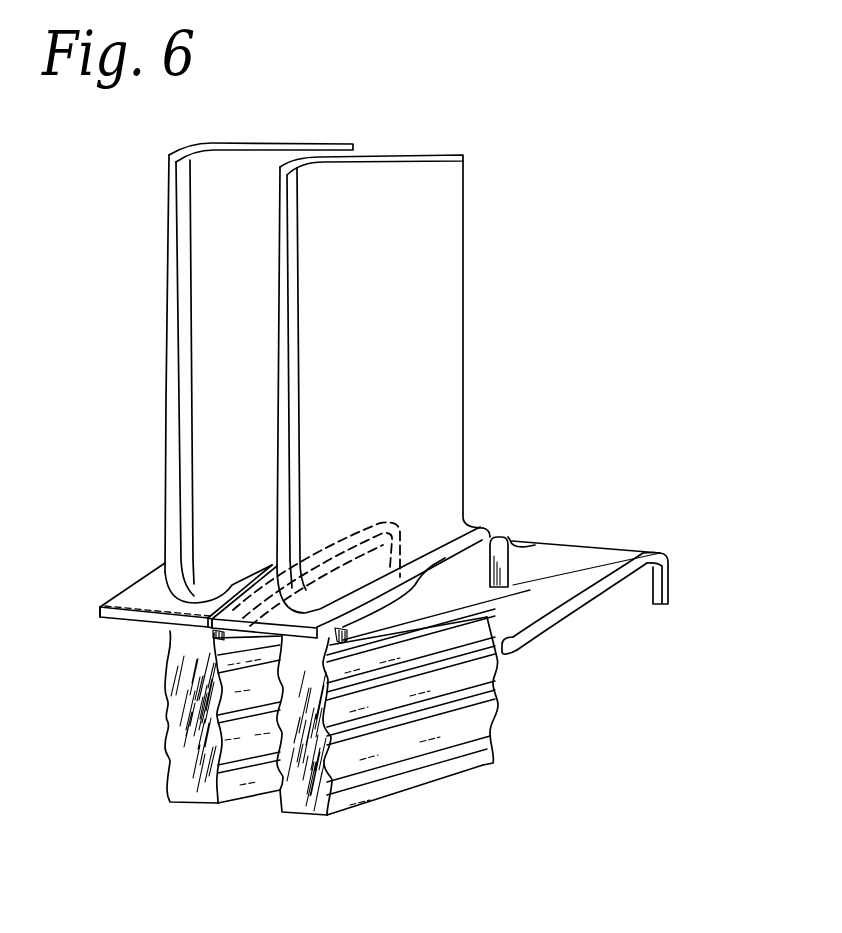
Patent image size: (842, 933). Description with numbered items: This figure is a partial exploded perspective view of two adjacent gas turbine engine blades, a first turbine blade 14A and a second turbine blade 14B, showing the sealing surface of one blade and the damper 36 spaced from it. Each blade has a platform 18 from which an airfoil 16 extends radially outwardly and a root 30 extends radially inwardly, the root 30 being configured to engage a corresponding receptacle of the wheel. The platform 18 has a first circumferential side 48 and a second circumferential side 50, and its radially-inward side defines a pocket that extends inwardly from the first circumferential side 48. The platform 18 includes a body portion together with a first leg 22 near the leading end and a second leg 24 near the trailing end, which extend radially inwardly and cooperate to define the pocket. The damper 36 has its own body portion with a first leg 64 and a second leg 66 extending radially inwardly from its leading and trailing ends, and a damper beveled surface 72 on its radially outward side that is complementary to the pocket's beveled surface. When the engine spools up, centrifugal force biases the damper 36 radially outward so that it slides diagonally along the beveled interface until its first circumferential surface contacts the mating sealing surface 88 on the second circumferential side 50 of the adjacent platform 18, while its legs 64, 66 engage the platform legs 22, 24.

The first turbine blade 14A is at (496, 486).
The second turbine blade 14B is at (130, 551).
The airfoil 16 is at (216, 283).
The platform 18 is at (145, 593).
The first leg 22 is at (510, 567).
The second leg 24 is at (345, 645).
The root 30 is at (207, 790).
The damper 36 is at (676, 551).
The first circumferential side 48 is at (86, 611).
The second circumferential side 50 is at (523, 525).
The first leg 64 is at (672, 583).
The second leg 66 is at (514, 647).
The damper beveled surface 72 is at (590, 583).
The mating sealing surface 88 is at (380, 601).